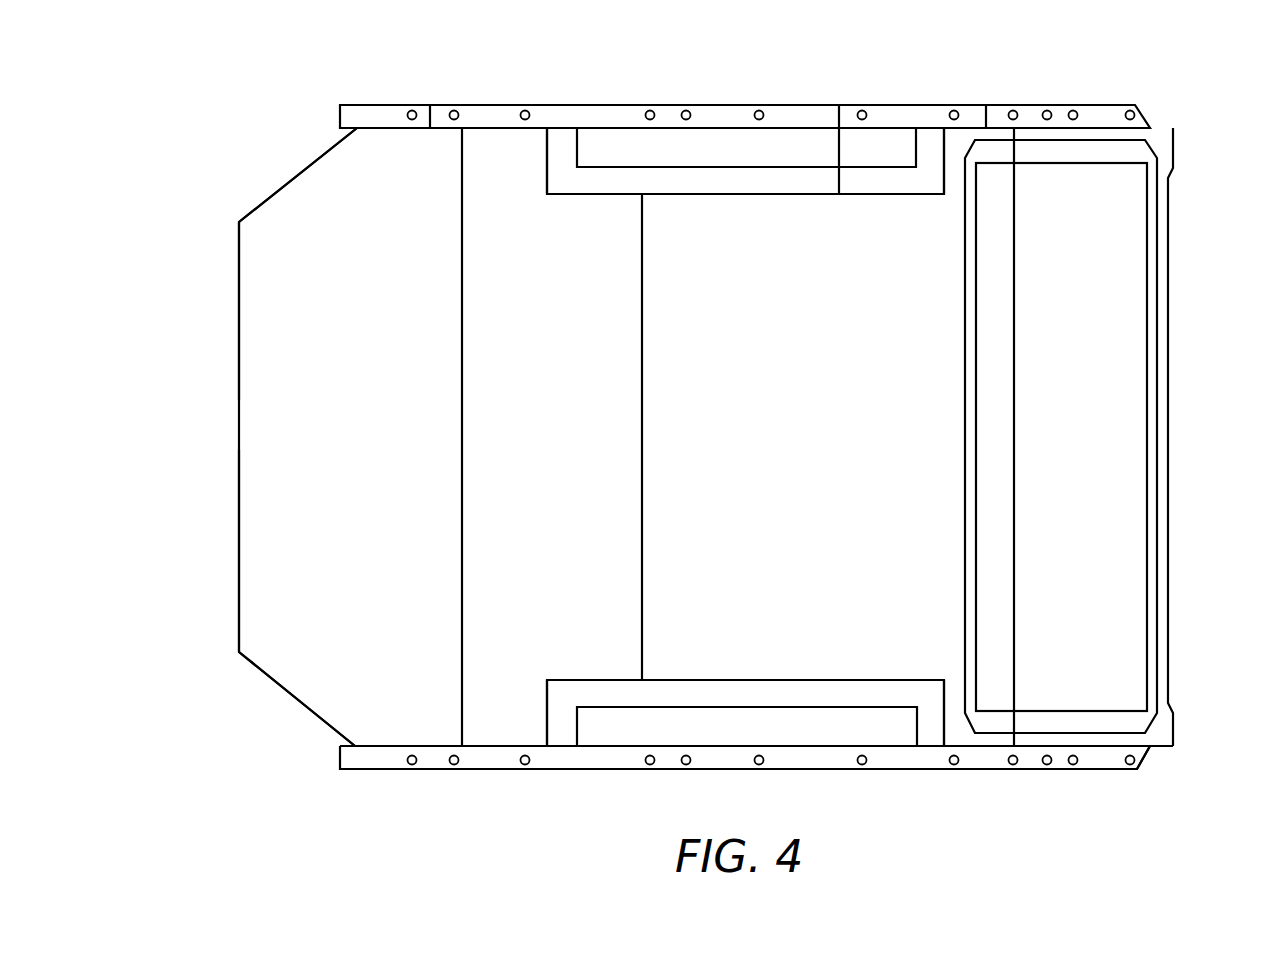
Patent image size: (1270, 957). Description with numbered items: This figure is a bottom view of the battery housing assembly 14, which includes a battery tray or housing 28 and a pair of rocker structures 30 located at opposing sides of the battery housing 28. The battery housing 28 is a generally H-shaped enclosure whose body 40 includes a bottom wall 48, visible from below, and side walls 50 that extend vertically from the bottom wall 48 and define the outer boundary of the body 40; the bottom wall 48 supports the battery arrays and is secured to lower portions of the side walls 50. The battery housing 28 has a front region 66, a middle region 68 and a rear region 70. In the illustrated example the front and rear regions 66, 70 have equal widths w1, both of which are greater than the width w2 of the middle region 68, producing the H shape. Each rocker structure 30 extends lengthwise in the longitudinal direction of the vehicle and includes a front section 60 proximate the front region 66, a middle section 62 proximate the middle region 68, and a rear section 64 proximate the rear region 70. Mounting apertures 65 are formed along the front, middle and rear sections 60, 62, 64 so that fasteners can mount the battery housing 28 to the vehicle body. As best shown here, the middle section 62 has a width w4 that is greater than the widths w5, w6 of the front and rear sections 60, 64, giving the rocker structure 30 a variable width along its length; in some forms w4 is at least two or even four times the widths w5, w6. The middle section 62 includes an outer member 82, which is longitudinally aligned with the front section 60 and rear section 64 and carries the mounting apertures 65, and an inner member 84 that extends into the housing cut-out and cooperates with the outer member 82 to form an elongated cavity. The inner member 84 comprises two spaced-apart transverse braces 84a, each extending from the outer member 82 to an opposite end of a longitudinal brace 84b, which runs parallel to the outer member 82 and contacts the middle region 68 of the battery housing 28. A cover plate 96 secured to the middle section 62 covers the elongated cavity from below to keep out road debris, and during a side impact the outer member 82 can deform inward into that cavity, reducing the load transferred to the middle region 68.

The battery housing assembly 14 is at (262, 703).
The battery housing 28 is at (298, 133).
The rocker structure 30 is at (1122, 103).
The body 40 is at (239, 308).
The bottom wall 48 is at (272, 213).
The side walls 50 is at (239, 508).
The front section 60 is at (492, 769).
The middle section 62 is at (833, 773).
The rear section 64 is at (1118, 770).
The mounting apertures 65 is at (1022, 108).
The front region 66 is at (239, 566).
The middle region 68 is at (813, 413).
The rear region 70 is at (1123, 133).
The outer member 82 is at (920, 770).
The inner member 84 is at (873, 708).
The transverse braces 84a is at (558, 145).
The longitudinal brace 84b is at (790, 148).
The cover plate 96 is at (610, 144).
The width of front and rear regions w1 is at (468, 425).
The width of middle region w2 is at (640, 463).
The width of middle section w4 is at (840, 147).
The width of front section w5 is at (430, 116).
The width of rear section w6 is at (990, 113).